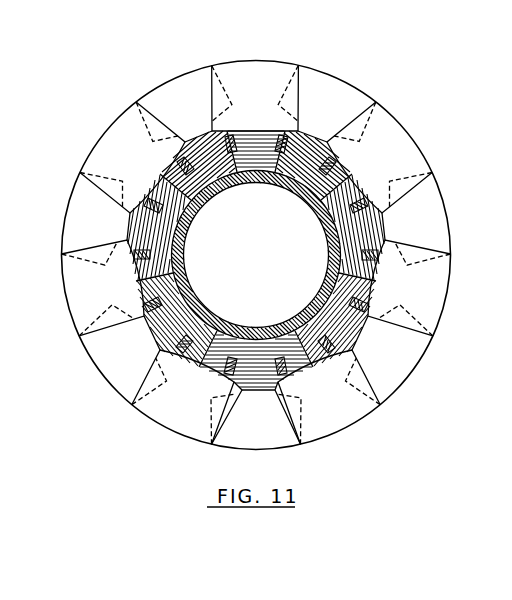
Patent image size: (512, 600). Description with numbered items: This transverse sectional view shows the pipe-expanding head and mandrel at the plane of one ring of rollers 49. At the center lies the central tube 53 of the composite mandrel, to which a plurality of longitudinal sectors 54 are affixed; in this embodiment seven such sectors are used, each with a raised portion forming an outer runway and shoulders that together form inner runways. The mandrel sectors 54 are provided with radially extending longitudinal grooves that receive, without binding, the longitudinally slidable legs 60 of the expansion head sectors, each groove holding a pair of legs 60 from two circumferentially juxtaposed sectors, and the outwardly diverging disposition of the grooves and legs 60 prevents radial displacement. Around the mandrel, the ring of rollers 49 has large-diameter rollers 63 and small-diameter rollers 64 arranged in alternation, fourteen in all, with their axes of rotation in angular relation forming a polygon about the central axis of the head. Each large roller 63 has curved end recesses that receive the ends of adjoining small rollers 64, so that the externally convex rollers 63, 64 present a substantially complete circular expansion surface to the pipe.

The ring of rollers 49 is at (317, 55).
The central tube 53 is at (206, 184).
The longitudinal sectors 54 is at (254, 174).
The legs 60 is at (328, 161).
The large-diameter rollers 63 is at (400, 124).
The small-diameter rollers 64 is at (357, 89).